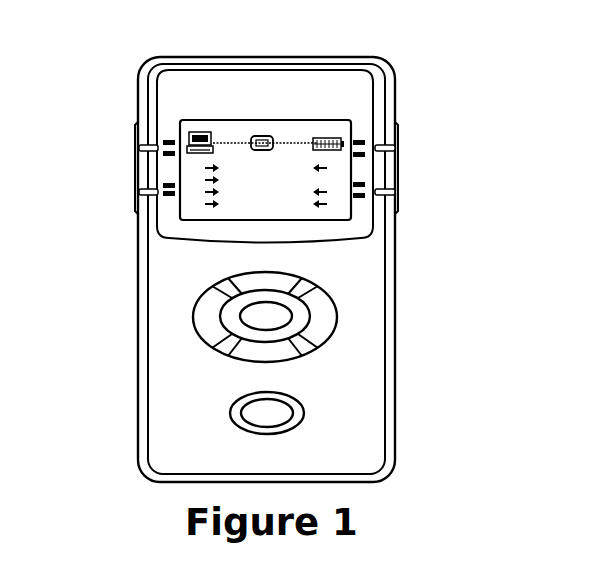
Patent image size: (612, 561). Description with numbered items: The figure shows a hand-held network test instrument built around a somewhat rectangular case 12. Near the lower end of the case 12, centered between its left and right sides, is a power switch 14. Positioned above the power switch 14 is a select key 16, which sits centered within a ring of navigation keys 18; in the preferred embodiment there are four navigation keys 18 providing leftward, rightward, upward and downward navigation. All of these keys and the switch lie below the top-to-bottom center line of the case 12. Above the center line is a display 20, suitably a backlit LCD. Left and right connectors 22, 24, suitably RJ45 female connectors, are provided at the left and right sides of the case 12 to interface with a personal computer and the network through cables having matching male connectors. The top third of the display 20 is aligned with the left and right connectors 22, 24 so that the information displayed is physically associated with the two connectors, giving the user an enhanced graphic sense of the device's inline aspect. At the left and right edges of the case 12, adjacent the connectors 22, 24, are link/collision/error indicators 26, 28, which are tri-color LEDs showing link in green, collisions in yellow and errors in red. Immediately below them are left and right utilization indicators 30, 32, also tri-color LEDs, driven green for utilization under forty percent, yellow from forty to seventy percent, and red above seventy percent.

The case 12 is at (395, 354).
The power switch 14 is at (259, 418).
The select key 16 is at (263, 322).
The navigation keys 18 is at (327, 320).
The display 20 is at (263, 121).
The left connector 22 is at (135, 134).
The right connector 24 is at (398, 133).
The left link/collision/error indicator 26 is at (139, 150).
The right link/collision/error indicator 28 is at (396, 150).
The left utilization indicator 30 is at (139, 193).
The right utilization indicator 32 is at (396, 193).